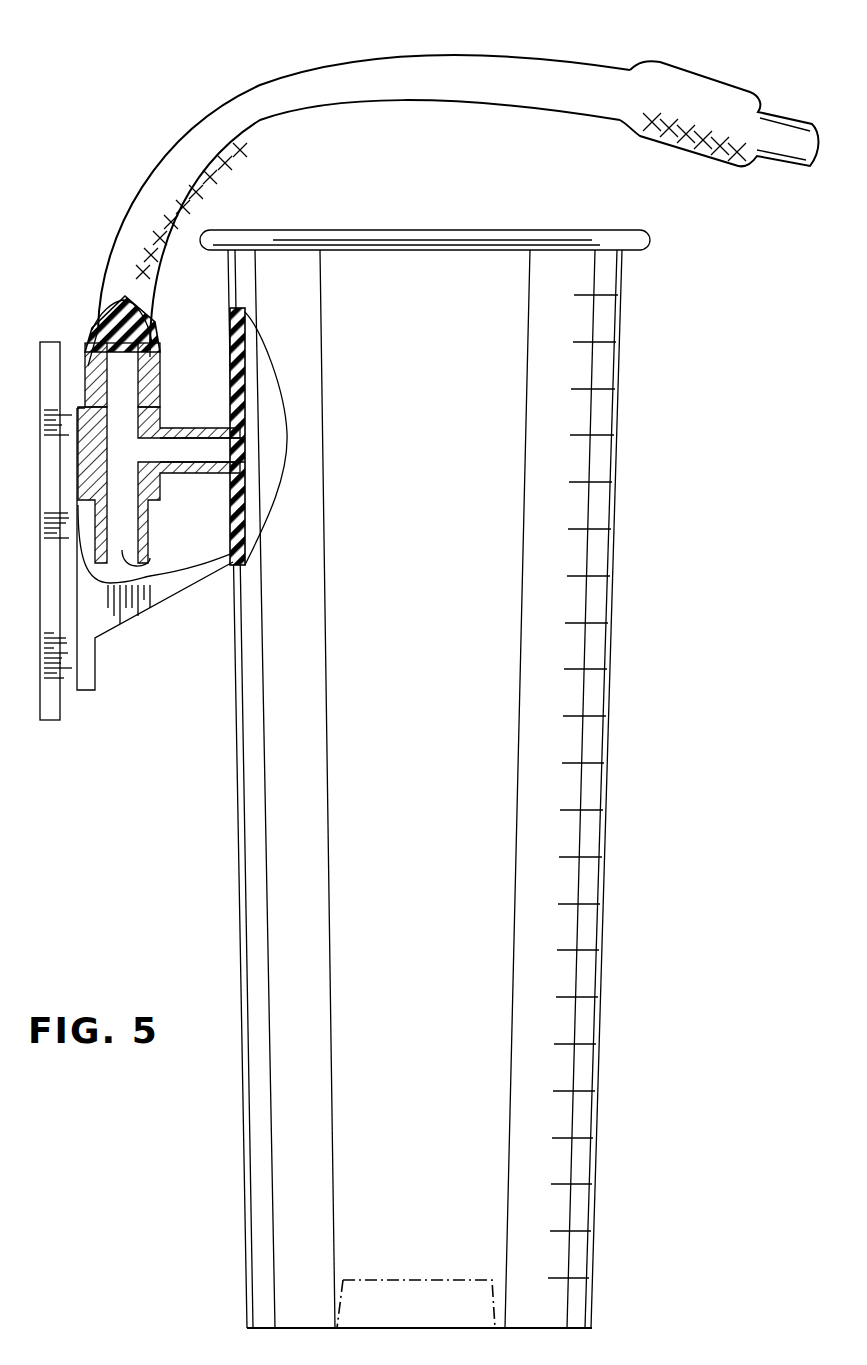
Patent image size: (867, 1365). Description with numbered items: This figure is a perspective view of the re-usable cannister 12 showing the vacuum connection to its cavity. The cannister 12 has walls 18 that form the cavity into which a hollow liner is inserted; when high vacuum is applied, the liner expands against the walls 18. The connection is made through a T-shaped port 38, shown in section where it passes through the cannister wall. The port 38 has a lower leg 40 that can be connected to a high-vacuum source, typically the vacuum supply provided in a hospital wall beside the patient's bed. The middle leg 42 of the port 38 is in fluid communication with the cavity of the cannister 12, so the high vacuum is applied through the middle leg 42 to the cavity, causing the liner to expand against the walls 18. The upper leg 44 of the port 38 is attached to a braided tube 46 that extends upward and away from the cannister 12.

The cannister 12 is at (655, 418).
The walls 18 is at (232, 342).
The "T"-shaped port 38 is at (145, 450).
The lower leg 40 is at (158, 580).
The middle leg 42 is at (183, 470).
The upper leg 44 is at (90, 340).
The braided tube 46 is at (497, 66).